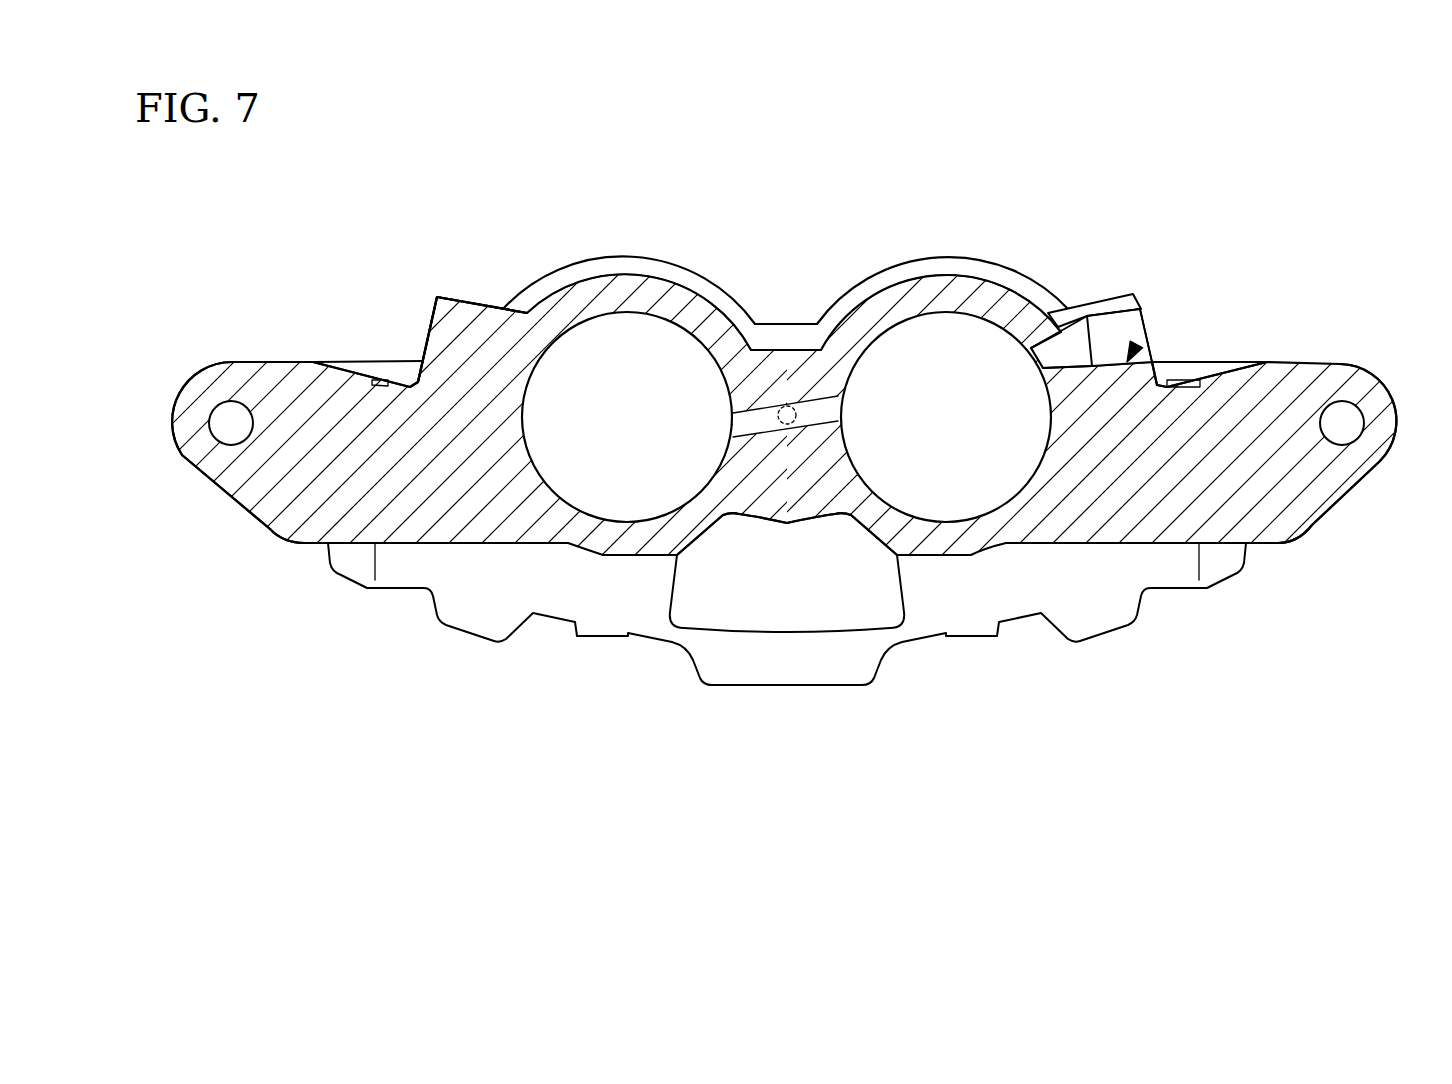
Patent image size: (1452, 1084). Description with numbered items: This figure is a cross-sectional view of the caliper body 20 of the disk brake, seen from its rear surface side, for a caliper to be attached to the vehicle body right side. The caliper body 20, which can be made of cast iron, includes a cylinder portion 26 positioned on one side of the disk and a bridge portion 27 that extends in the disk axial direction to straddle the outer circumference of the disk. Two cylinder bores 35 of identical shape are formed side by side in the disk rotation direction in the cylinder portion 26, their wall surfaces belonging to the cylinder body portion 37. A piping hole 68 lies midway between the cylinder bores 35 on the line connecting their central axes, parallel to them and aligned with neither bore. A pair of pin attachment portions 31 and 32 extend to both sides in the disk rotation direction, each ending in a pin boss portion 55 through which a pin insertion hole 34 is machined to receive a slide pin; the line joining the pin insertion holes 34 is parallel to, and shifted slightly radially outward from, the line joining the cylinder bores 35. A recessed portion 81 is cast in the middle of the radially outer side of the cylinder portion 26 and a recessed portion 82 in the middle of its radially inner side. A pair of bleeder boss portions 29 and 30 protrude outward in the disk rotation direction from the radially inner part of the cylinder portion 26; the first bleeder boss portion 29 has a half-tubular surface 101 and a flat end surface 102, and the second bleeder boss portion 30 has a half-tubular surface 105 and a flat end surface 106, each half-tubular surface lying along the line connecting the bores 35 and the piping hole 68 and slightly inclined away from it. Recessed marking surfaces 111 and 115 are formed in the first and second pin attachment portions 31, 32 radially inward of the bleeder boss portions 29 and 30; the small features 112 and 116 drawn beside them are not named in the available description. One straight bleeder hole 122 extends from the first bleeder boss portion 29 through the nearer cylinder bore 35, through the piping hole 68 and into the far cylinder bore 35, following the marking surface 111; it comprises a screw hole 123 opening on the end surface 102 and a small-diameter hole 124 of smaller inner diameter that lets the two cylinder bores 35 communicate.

The caliper body 20 is at (1350, 645).
The cylinder portion 26 is at (805, 492).
The bridge portion 27 is at (808, 668).
The first bleeder boss portion 29 is at (1140, 325).
The second bleeder boss portion 30 is at (436, 296).
The first pin attachment portion 31 is at (1368, 458).
The second pin attachment portion 32 is at (218, 462).
The pin insertion hole 34 is at (221, 420).
The cylinder bore 35 is at (625, 518).
The cylinder body portion 37 is at (623, 292).
The pin boss portion 55 is at (185, 424).
The piping hole 68 is at (790, 406).
The recessed portion 81 is at (787, 525).
The recessed portion 82 is at (787, 326).
The half-tubular surface 101 is at (1095, 308).
The end surface 102 is at (1138, 296).
The half-tubular surface 105 is at (481, 308).
The end surface 106 is at (430, 328).
The marking surface 111 is at (1212, 368).
The right projection 112 is at (1183, 386).
The marking surface 115 is at (352, 368).
The left projection 116 is at (387, 384).
The bleeder hole 122 is at (1152, 306).
The screw hole 123 is at (1136, 345).
The small-diameter hole 124 is at (1063, 343).